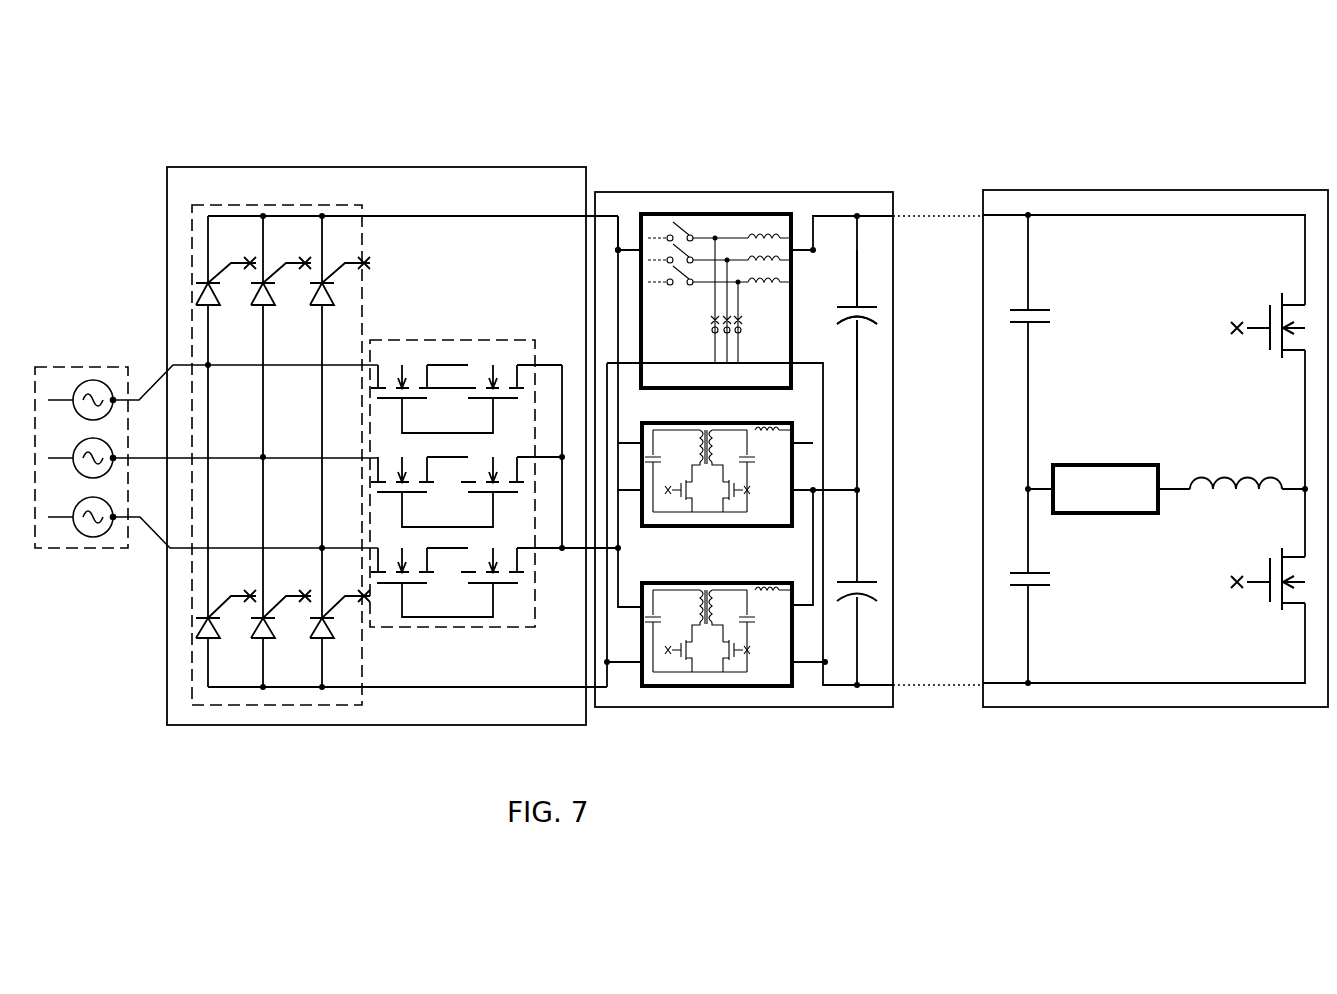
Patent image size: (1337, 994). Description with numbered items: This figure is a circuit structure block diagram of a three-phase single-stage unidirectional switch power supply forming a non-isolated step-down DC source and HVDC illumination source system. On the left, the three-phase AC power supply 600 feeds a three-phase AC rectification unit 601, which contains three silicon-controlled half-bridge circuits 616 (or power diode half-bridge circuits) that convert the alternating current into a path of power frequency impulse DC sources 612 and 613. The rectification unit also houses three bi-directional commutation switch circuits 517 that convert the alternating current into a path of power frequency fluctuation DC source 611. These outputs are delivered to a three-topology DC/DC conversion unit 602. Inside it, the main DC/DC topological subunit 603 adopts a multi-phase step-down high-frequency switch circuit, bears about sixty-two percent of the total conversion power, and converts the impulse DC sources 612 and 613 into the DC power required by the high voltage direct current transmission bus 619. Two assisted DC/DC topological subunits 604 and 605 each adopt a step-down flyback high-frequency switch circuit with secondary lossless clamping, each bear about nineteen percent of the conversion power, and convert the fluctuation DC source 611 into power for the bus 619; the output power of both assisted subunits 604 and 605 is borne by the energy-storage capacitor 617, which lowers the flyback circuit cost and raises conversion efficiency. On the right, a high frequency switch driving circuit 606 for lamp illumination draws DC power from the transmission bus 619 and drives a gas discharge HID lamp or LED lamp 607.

The three-phase AC power supply 600 is at (43, 365).
The three-phase AC rectification unit 601 is at (202, 167).
The silicon-controlled half-bridge circuit 616 is at (302, 205).
The bi-directional commutation switch circuit 517 is at (388, 340).
The power frequency fluctuation DC source 611 is at (562, 615).
The three-topology DC/DC conversion unit 602 is at (702, 192).
The main DC/DC topological subunit 603 is at (752, 214).
The assisted DC/DC topological subunit 604 is at (652, 527).
The assisted DC/DC topological subunit 605 is at (723, 687).
The power frequency impulse DC source 612 is at (620, 246).
The power frequency impulse DC source 613 is at (607, 662).
The energy-storage capacitor 617 is at (880, 307).
The high voltage direct current (HVDC) transmission bus 619 is at (940, 216).
The high frequency switch driving circuit 606 is at (1118, 190).
The gas discharge lamp HID or LED lamp 607 is at (1090, 465).